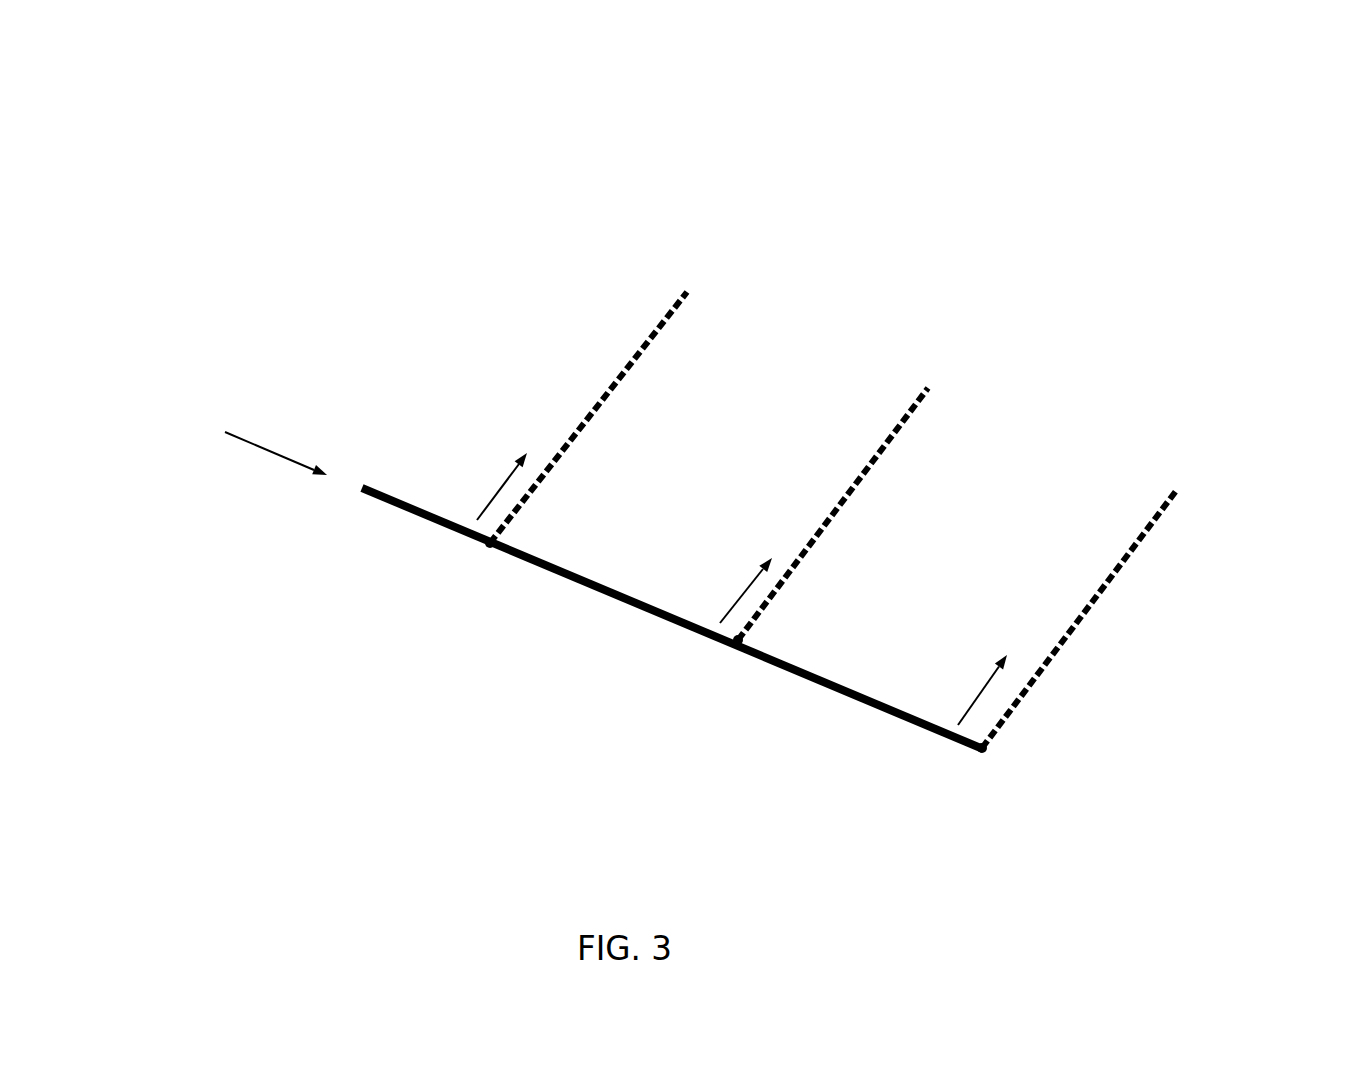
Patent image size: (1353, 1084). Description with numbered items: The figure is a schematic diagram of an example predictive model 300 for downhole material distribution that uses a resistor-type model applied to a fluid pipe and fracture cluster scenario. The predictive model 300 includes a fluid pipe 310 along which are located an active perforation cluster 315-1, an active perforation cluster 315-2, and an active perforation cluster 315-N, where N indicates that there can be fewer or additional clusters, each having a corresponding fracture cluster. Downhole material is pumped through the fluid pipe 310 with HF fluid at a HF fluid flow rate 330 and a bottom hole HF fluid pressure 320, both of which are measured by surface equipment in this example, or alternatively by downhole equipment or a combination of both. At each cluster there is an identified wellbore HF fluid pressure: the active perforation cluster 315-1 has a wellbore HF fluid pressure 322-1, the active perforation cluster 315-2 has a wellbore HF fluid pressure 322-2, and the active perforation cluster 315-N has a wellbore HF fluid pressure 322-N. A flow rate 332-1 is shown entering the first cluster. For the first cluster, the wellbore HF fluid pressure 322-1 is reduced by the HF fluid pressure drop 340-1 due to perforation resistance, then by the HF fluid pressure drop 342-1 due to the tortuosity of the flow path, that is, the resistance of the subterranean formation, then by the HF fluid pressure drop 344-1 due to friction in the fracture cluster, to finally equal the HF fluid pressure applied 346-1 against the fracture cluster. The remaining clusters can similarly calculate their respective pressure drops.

The predictive model 300 is at (240, 111).
The fluid pipe 310 is at (412, 517).
The bottom hole HF fluid pressure 320 is at (312, 545).
The HF fluid flow rate 330 is at (250, 400).
The flow rate q1 into first cluster 332-1 is at (448, 470).
The active perforation cluster 315-1 is at (491, 548).
The active perforation cluster 315-2 is at (737, 650).
The active perforation cluster 315-N is at (982, 752).
The wellbore HF fluid pressure 322-1 is at (450, 590).
The wellbore HF fluid pressure 322-2 is at (688, 698).
The wellbore HF fluid pressure 322-N is at (930, 800).
The HF fluid pressure drop due to perforation resistance 340-1 is at (572, 517).
The HF fluid pressure drop due to tortuosity 342-1 is at (627, 440).
The HF fluid pressure drop due to friction in the fracture cluster 344-1 is at (678, 357).
The HF fluid pressure applied against the fracture cluster 346-1 is at (713, 260).